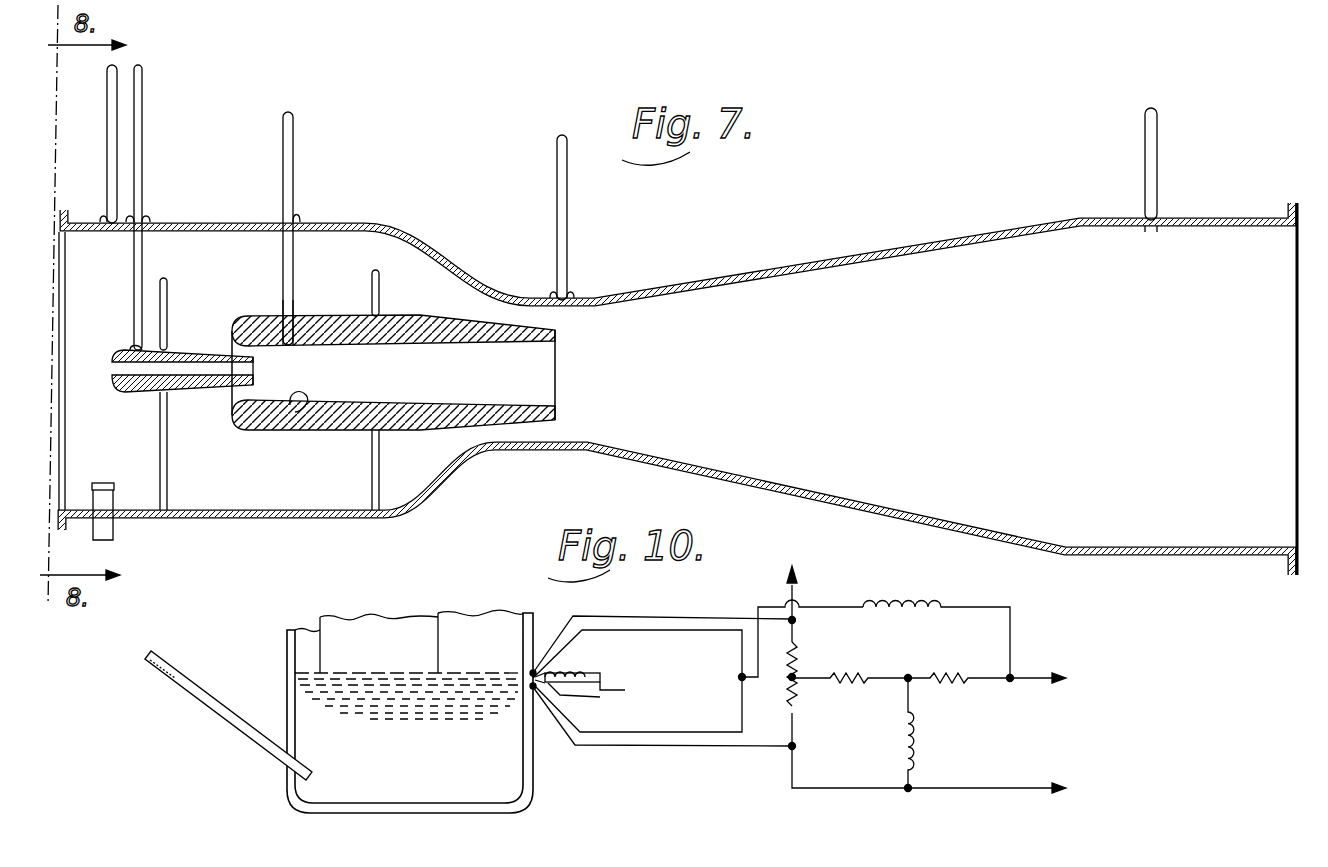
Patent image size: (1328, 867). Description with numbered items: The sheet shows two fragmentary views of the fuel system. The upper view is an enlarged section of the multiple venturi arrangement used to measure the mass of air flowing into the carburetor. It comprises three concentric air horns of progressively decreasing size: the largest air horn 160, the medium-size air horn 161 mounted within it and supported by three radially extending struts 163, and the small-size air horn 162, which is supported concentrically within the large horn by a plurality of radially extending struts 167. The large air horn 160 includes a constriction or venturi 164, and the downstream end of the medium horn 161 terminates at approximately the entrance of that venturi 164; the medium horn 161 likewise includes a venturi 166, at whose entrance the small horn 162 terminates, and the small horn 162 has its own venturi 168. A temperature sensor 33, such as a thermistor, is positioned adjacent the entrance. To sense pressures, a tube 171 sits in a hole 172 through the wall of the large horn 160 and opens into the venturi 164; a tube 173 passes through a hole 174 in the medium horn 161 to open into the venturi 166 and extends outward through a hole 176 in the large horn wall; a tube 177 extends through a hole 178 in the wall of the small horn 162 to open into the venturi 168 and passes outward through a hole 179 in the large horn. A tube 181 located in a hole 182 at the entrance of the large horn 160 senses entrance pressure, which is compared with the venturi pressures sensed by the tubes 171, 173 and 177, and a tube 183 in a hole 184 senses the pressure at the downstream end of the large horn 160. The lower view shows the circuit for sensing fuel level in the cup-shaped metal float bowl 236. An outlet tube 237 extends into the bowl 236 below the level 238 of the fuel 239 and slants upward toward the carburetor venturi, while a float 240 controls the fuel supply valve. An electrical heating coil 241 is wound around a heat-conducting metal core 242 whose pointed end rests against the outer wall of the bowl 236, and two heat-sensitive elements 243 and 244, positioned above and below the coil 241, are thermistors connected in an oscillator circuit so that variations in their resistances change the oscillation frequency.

In FIG. 7, the temperature sensor 33 is at (113, 490).
In FIG. 7, the large air horn 160 is at (945, 232).
In FIG. 7, the medium-size air horn 161 is at (452, 308).
In FIG. 7, the small-size air horn 162 is at (137, 400).
In FIG. 7, the struts 163 is at (373, 275).
In FIG. 7, the venturi 164 is at (553, 443).
In FIG. 7, the venturi 166 is at (297, 432).
In FIG. 7, the struts 167 is at (167, 297).
In FIG. 7, the venturi 168 is at (114, 372).
In FIG. 7, the tube 171 is at (567, 220).
In FIG. 7, the hole 172 is at (567, 292).
In FIG. 7, the tube 173 is at (293, 137).
In FIG. 7, the hole 174 is at (293, 312).
In FIG. 7, the hole 176 is at (293, 214).
In FIG. 7, the tube 177 is at (142, 108).
In FIG. 7, the hole 178 is at (137, 350).
In FIG. 7, the hole 179 is at (142, 222).
In FIG. 7, the tube 181 is at (107, 113).
In FIG. 7, the hole 182 is at (104, 222).
In FIG. 7, the tube 183 is at (1152, 177).
In FIG. 7, the hole 184 is at (1150, 226).
In FIG. 10, the float bowl 236 is at (287, 647).
In FIG. 10, the outlet tube 237 is at (265, 748).
In FIG. 10, the fuel level 238 is at (460, 670).
In FIG. 10, the fuel 239 is at (482, 778).
In FIG. 10, the float 240 is at (410, 654).
In FIG. 10, the heating coil 241 is at (572, 695).
In FIG. 10, the metal core 242 is at (618, 682).
In FIG. 10, the heat-sensitive electrical element 243 is at (533, 668).
In FIG. 10, the heat-sensitive electrical element 244 is at (530, 686).